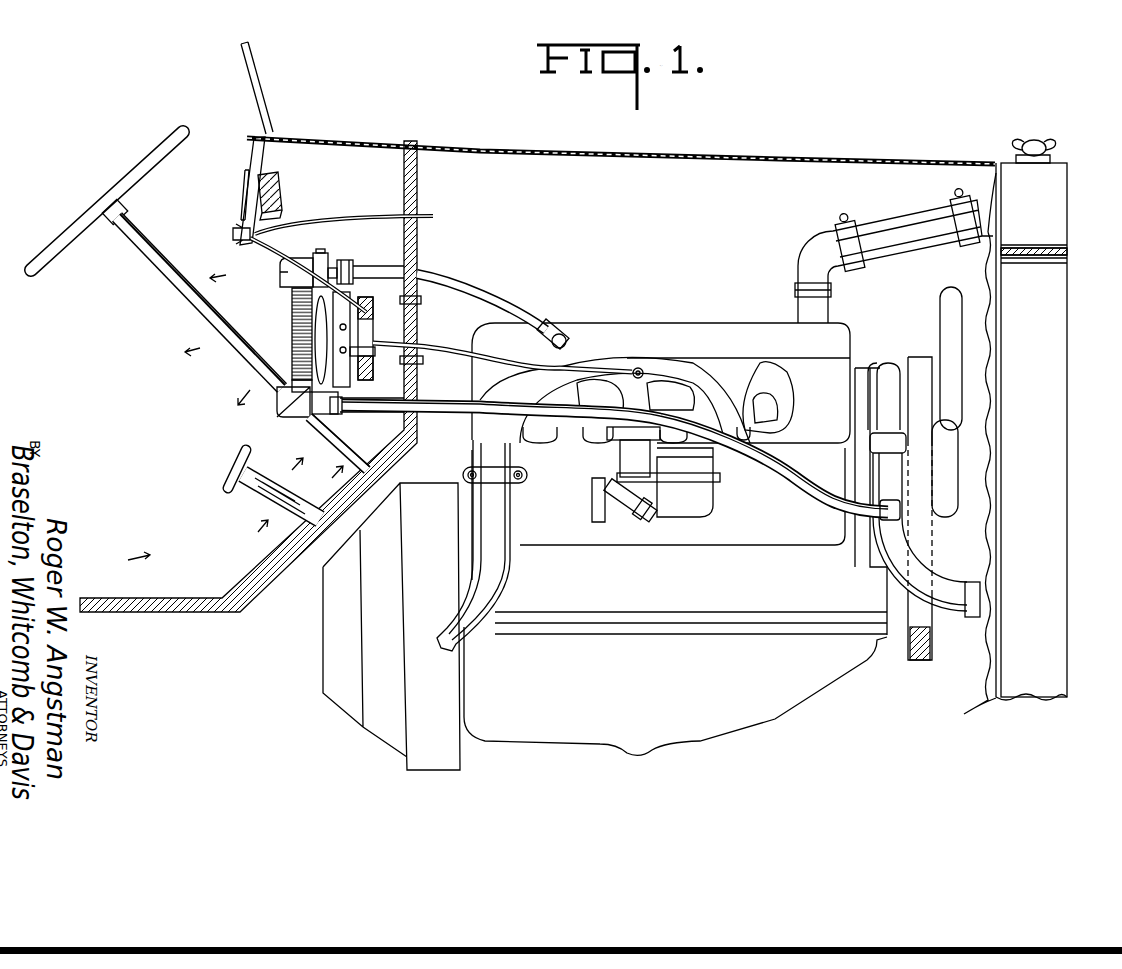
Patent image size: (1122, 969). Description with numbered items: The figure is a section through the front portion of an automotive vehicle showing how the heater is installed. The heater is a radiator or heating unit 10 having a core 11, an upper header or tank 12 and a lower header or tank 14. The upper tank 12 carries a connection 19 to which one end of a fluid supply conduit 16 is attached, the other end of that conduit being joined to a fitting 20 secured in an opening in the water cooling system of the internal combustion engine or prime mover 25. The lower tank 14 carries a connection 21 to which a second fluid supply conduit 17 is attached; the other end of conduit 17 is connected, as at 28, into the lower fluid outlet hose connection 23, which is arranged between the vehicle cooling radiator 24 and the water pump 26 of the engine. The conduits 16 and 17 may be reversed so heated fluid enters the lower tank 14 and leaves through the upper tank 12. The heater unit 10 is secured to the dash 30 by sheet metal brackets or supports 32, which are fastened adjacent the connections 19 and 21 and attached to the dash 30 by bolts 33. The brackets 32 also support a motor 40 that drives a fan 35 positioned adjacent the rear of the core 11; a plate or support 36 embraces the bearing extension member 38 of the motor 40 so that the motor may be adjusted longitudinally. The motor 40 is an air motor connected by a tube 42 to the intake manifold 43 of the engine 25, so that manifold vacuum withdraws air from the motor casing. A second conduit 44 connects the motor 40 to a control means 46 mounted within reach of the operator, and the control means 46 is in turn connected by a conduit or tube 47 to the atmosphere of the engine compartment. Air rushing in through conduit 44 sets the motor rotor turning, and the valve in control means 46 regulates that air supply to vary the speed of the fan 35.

The radiator or heating unit 10 is at (285, 300).
The core 11 is at (297, 342).
The upper header or tank 12 is at (334, 257).
The lower header or tank 14 is at (315, 418).
The fluid supply conduit 16 is at (487, 290).
The fluid supply conduit 17 is at (458, 405).
The connection 19 is at (350, 268).
The fitting 20 is at (566, 330).
The connection 21 is at (360, 420).
The lower fluid outlet hose connection 23 is at (906, 548).
The vehicle cooling radiator 24 is at (1050, 527).
The internal combustion engine or prime mover 25 is at (786, 330).
The water pump 26 is at (886, 368).
The connection point 28 is at (888, 514).
The dash 30 is at (421, 207).
The brackets or supports 32 is at (420, 272).
The bolts 33 is at (418, 299).
The fan 35 is at (300, 318).
The plate or support 36 is at (281, 408).
The bearing extension member 38 is at (370, 352).
The motor 40 is at (368, 328).
The tube 42 is at (428, 350).
The intake manifold 43 is at (626, 357).
The second conduit 44 is at (286, 270).
The control means 46 is at (236, 232).
The conduit or tube 47 is at (315, 222).